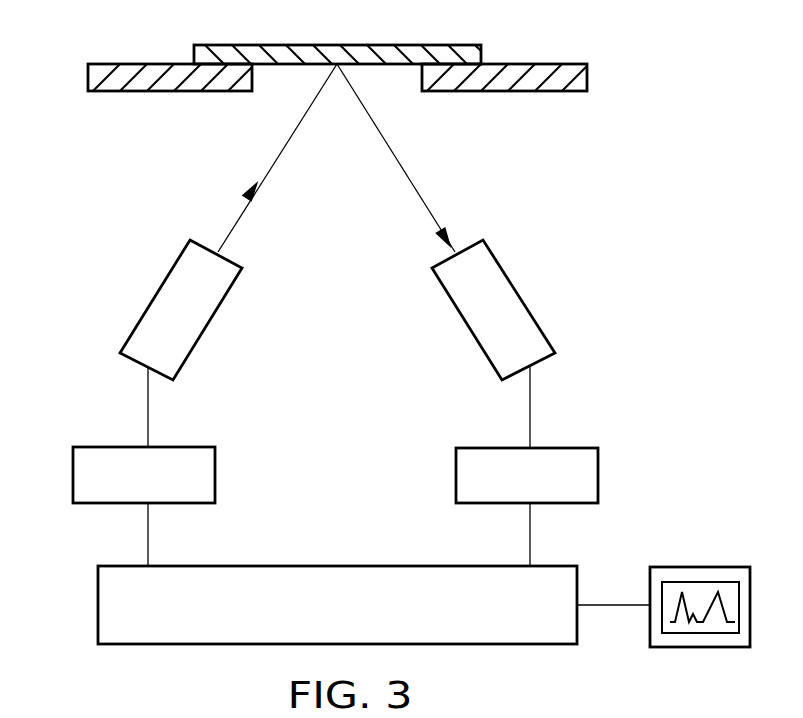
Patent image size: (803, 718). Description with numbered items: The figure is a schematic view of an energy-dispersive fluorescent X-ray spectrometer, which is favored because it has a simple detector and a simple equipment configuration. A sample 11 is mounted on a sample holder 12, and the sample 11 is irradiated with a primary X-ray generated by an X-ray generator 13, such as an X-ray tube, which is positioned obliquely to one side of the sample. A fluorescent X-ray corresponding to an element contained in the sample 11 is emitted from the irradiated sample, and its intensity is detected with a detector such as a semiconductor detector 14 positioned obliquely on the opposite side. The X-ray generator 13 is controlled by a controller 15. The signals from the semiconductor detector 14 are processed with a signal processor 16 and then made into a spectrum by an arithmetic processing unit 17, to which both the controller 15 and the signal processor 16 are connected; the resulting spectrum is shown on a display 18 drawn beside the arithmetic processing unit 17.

The sample 11 is at (476, 53).
The sample holder 12 is at (520, 87).
The X-ray generator 13 is at (173, 290).
The semiconductor detector 14 is at (500, 290).
The controller 15 is at (85, 475).
The signal processor 16 is at (598, 470).
The arithmetic processing unit 17 is at (345, 576).
The display 18 is at (700, 575).